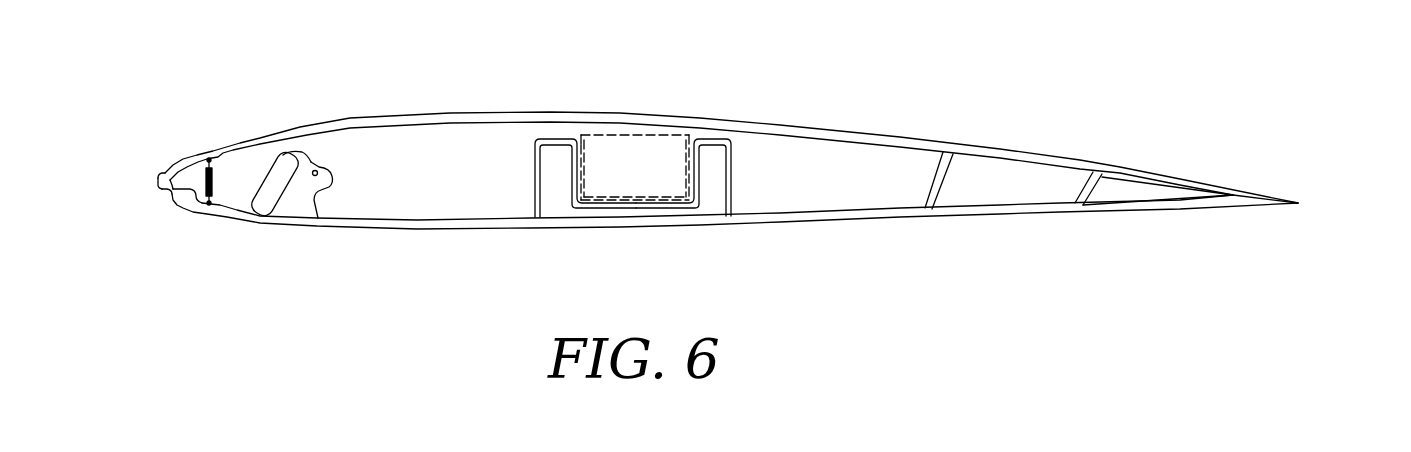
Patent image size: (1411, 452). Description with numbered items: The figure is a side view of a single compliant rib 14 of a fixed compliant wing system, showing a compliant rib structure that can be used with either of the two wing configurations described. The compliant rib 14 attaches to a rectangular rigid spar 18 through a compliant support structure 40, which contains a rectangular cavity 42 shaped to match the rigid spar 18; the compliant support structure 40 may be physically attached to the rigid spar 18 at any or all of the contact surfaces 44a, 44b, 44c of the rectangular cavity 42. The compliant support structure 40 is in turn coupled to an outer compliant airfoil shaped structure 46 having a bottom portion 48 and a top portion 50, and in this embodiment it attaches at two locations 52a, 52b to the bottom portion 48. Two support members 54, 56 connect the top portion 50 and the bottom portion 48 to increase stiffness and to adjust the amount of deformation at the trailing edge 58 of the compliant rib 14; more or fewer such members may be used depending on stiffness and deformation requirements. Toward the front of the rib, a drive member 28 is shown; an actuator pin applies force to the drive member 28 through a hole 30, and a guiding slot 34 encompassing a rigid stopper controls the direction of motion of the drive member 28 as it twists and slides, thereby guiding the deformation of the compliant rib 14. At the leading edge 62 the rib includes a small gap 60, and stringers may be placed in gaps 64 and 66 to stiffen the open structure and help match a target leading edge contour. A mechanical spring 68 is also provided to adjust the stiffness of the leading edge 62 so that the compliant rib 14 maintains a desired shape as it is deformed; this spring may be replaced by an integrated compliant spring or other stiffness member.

The compliant rib 14 is at (630, 56).
The rigid spar 18 is at (638, 134).
The drive member 28 is at (298, 208).
The hole 30 is at (320, 173).
The guiding slot 34 is at (295, 166).
The compliant support structure 40 is at (640, 207).
The rectangular cavity 42 is at (585, 138).
The contact surface 44a is at (578, 171).
The contact surface 44b is at (618, 204).
The contact surface 44c is at (692, 170).
The outer compliant airfoil shaped structure 46 is at (1021, 218).
The bottom portion 48 is at (965, 217).
The top portion 50 is at (855, 128).
The attachment location 52a is at (537, 224).
The attachment location 52b is at (726, 218).
The support member 54 is at (938, 178).
The support member 56 is at (1085, 187).
The trailing edge 58 is at (1299, 183).
The small gap 60 is at (167, 196).
The leading edge 62 is at (168, 156).
The gap 64 is at (170, 200).
The gap 66 is at (159, 178).
The mechanical spring 68 is at (216, 172).